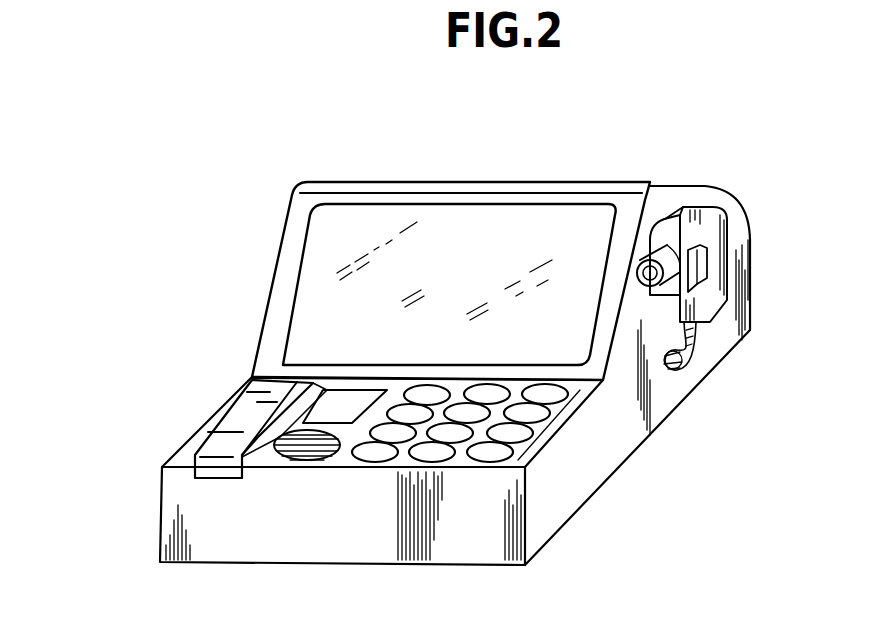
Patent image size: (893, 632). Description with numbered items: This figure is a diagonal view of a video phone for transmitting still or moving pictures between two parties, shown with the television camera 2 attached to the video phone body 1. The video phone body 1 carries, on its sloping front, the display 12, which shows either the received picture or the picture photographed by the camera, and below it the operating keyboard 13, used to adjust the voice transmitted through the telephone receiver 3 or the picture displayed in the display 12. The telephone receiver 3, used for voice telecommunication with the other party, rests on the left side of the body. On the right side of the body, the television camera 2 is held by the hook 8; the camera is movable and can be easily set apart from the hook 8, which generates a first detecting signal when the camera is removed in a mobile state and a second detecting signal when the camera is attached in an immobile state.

The video phone body 1 is at (617, 437).
The television camera 2 is at (812, 157).
The telephone receiver 3 is at (222, 405).
The hook 8 is at (705, 265).
The display 12 is at (390, 224).
The operating keyboard 13 is at (560, 422).